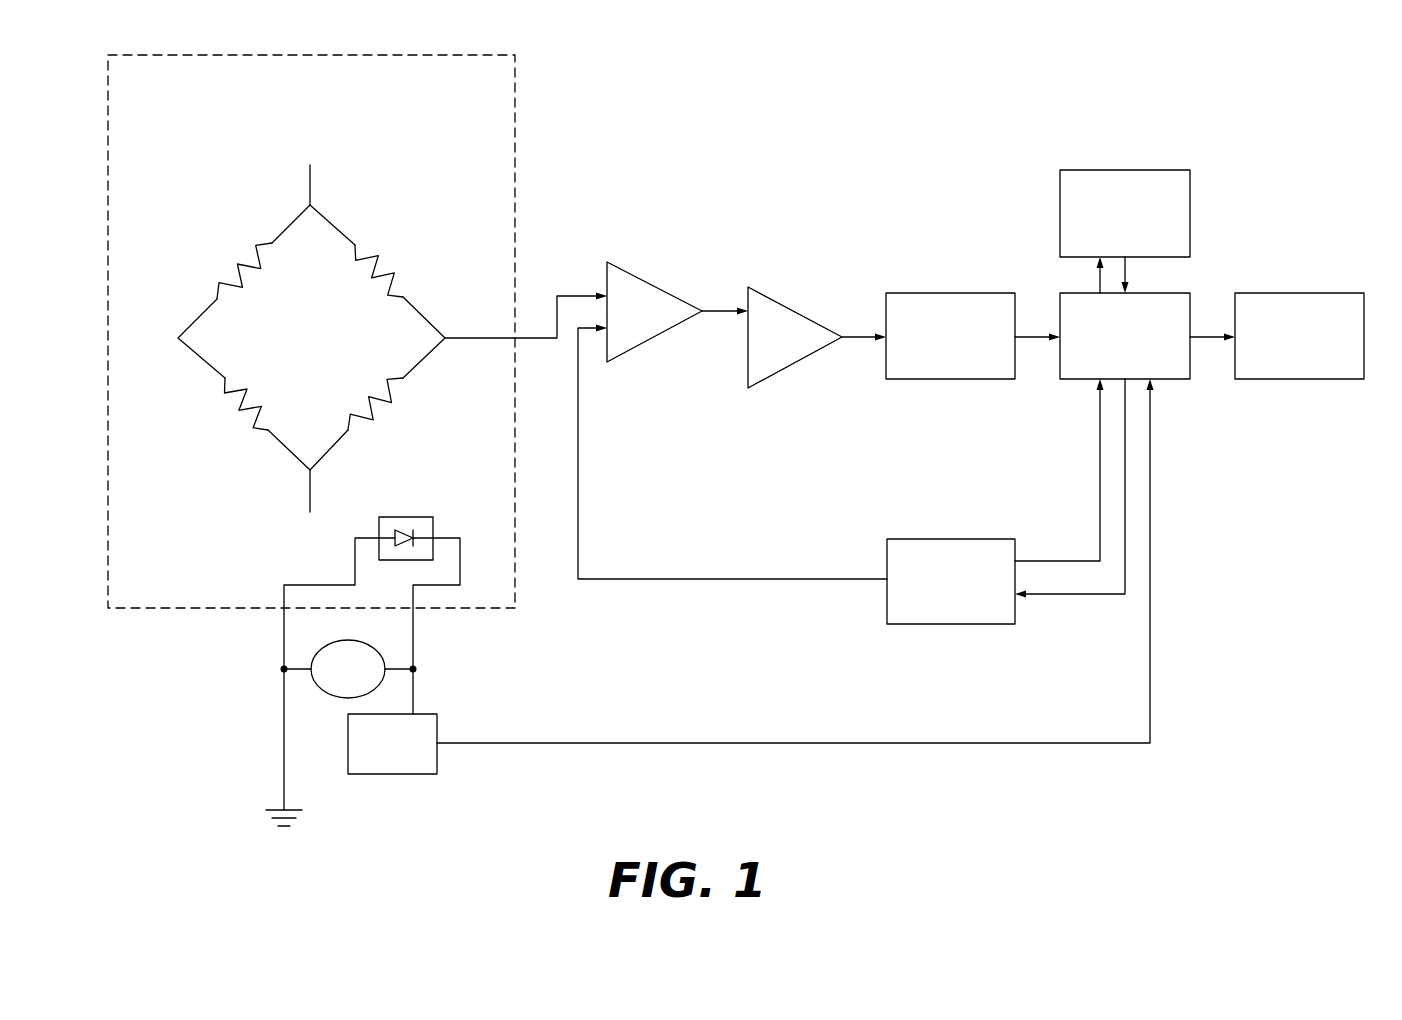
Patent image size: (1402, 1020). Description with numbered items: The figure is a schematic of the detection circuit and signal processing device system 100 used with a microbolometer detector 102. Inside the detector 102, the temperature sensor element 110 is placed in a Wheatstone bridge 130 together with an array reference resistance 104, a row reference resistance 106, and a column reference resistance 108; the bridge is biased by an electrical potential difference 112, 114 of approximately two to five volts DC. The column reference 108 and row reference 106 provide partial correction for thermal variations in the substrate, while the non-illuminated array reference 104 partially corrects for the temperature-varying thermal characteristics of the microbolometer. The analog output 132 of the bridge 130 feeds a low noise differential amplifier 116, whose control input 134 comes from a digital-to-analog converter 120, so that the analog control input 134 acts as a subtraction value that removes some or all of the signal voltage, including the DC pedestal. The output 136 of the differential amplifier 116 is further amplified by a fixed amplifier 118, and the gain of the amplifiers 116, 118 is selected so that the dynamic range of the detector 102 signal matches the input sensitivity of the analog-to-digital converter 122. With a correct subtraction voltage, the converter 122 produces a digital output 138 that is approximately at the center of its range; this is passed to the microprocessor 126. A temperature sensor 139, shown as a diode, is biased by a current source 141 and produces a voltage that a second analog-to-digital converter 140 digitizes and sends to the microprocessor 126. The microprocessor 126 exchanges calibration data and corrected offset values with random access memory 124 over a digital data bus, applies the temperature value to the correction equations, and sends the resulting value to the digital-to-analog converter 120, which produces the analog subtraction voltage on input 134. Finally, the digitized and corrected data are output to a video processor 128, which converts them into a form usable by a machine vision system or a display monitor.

The detection circuit and signal processing device system 100 is at (1250, 103).
The microbolometer detector 102 is at (202, 108).
The array reference resistance 104 is at (247, 260).
The row reference resistance 106 is at (237, 417).
The column reference resistance 108 is at (363, 258).
The temperature sensor element 110 is at (373, 417).
The electrical potential difference terminal 112 is at (310, 184).
The electrical potential difference terminal 114 is at (310, 491).
The low noise differential amplifier 116 is at (662, 325).
The fixed amplifier 118 is at (804, 350).
The digital-to-analog converter 120 is at (974, 594).
The analog-to-digital converter 122 is at (974, 349).
The random access memory 124 is at (1148, 226).
The microprocessor 126 is at (1148, 349).
The video processor 128 is at (1323, 349).
The Wheatstone bridge 130 is at (332, 352).
The detector output 132 is at (580, 296).
The control input 134 is at (578, 418).
The differential amplifier output 136 is at (720, 311).
The ADC output 138 is at (1036, 338).
The temperature sensor 139 is at (425, 520).
The analog-to-digital converter 140 is at (416, 757).
The current source 141 is at (372, 682).